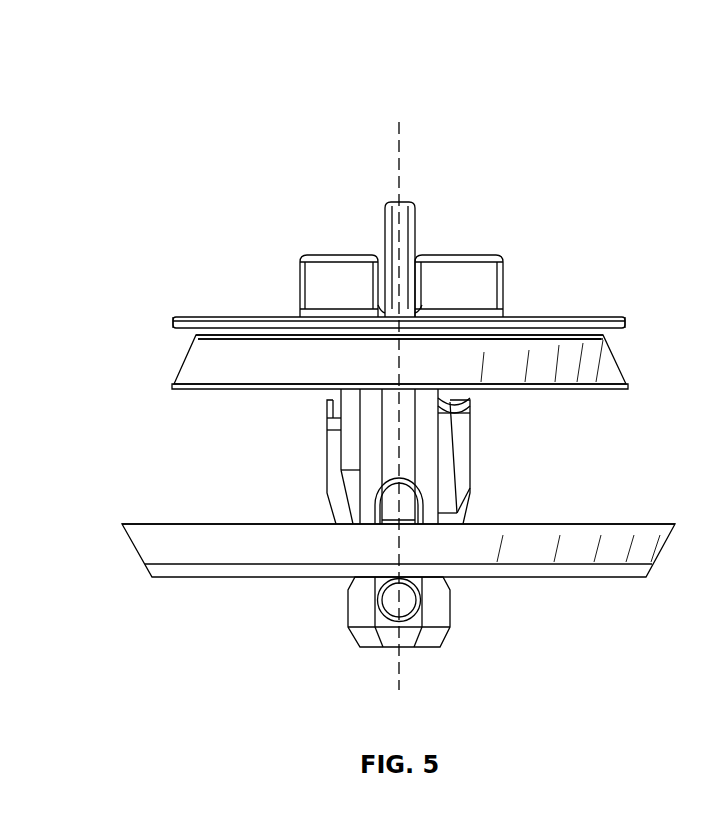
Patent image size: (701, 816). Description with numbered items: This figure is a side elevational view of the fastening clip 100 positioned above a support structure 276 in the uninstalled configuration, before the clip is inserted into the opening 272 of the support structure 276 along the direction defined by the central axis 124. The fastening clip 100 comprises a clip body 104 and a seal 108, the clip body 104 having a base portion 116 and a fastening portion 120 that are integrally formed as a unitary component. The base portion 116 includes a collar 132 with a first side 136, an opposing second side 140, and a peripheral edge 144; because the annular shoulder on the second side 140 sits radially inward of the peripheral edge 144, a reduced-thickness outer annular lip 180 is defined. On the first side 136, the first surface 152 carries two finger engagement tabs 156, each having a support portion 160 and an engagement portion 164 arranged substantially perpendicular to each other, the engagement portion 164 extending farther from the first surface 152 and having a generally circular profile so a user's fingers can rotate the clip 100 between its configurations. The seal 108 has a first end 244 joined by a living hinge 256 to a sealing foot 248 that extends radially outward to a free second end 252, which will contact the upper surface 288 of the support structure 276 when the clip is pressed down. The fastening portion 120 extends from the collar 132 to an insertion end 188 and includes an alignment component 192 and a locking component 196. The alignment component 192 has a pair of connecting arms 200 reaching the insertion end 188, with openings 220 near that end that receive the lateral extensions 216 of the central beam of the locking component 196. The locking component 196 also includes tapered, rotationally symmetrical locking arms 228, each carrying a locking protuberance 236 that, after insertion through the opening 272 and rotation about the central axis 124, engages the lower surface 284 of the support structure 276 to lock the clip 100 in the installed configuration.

The fastening clip 100 is at (186, 125).
The central axis 124 is at (400, 133).
The finger engagement tabs 156 is at (386, 212).
The support portion 160 is at (345, 272).
The engagement portion 164 is at (406, 212).
The base portion 116 is at (542, 248).
The first side 136 is at (165, 275).
The first surface 152 is at (213, 317).
The clip body 104 is at (556, 317).
The outer annular lip 180 is at (174, 317).
The collar 132 is at (590, 317).
The peripheral edge 144 is at (172, 329).
The living hinge 256 is at (195, 338).
The first end 244 is at (588, 336).
The sealing foot 248 is at (597, 358).
The seal 108 is at (177, 384).
The second side 140 is at (204, 377).
The second end 252 is at (588, 389).
The locking protuberance 236 is at (331, 406).
The locking arms 228 is at (470, 452).
The fastening portion 120 is at (165, 455).
The connecting arms 200 is at (417, 492).
The upper surface 288 is at (178, 523).
The locking component 196 is at (327, 483).
The opening 272 is at (477, 518).
The support structure 276 is at (160, 542).
The lower surface 284 is at (178, 580).
The alignment component 192 is at (355, 603).
The lateral extensions 216 is at (407, 593).
The insertion end 188 is at (362, 638).
The openings 220 is at (386, 628).